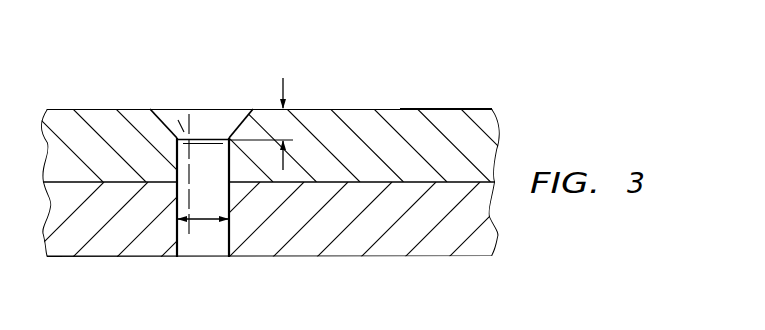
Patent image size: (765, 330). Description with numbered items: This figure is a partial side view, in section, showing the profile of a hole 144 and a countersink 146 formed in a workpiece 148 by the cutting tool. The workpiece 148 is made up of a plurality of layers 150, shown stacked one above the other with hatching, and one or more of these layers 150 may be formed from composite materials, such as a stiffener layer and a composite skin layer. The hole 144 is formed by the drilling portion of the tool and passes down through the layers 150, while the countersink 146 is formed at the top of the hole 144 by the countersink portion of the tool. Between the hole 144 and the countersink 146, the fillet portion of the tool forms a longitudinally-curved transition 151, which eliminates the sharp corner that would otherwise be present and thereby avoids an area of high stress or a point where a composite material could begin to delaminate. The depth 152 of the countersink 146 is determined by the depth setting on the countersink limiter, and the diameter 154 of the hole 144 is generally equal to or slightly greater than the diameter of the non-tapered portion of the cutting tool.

The hole 144 is at (193, 236).
The countersink 146 is at (168, 125).
The workpiece 148 is at (450, 115).
The layers 150 is at (405, 118).
The longitudinally-curved transition 151 is at (224, 128).
The depth of countersink 152 is at (282, 120).
The diameter of hole 154 is at (200, 213).